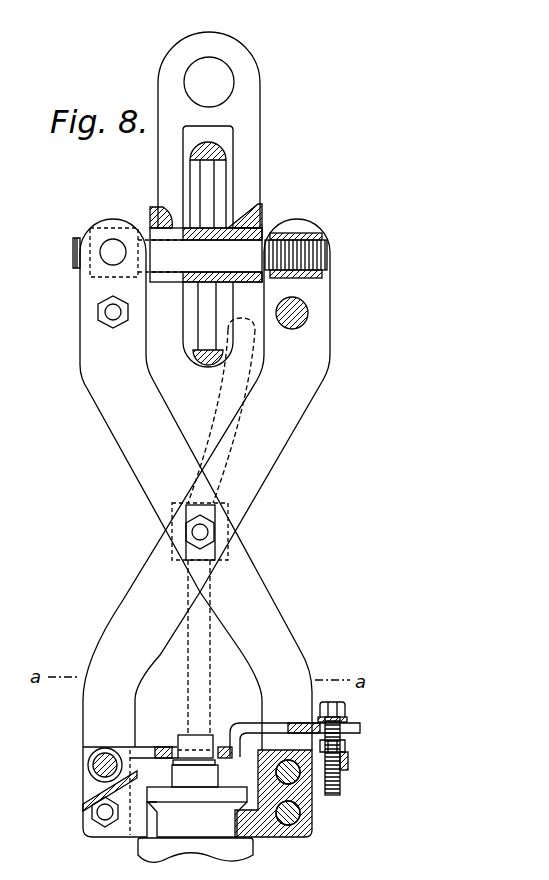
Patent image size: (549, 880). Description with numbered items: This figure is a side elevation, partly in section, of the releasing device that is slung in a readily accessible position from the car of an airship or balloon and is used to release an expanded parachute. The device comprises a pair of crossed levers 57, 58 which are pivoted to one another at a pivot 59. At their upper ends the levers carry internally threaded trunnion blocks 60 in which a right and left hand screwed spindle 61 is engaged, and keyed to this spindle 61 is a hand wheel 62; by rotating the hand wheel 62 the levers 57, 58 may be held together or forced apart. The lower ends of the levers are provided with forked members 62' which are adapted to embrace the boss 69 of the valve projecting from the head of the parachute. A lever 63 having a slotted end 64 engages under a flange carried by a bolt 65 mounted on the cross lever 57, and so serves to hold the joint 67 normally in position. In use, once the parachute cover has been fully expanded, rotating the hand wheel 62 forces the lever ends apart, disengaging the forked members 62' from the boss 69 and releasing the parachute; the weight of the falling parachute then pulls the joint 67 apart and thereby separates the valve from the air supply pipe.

The crossed lever 57 is at (131, 448).
The crossed lever 58 is at (278, 432).
The pivot 59 is at (205, 530).
The internally threaded trunnion block 60 is at (107, 224).
The right and left hand screwed spindle 61 is at (212, 249).
The hand wheel 62 is at (184, 199).
The forked member 62' is at (203, 813).
The lever 63 is at (158, 750).
The slotted end 64 is at (361, 724).
The bolt 65 is at (343, 738).
The joint 67 is at (207, 778).
The boss 69 is at (163, 790).